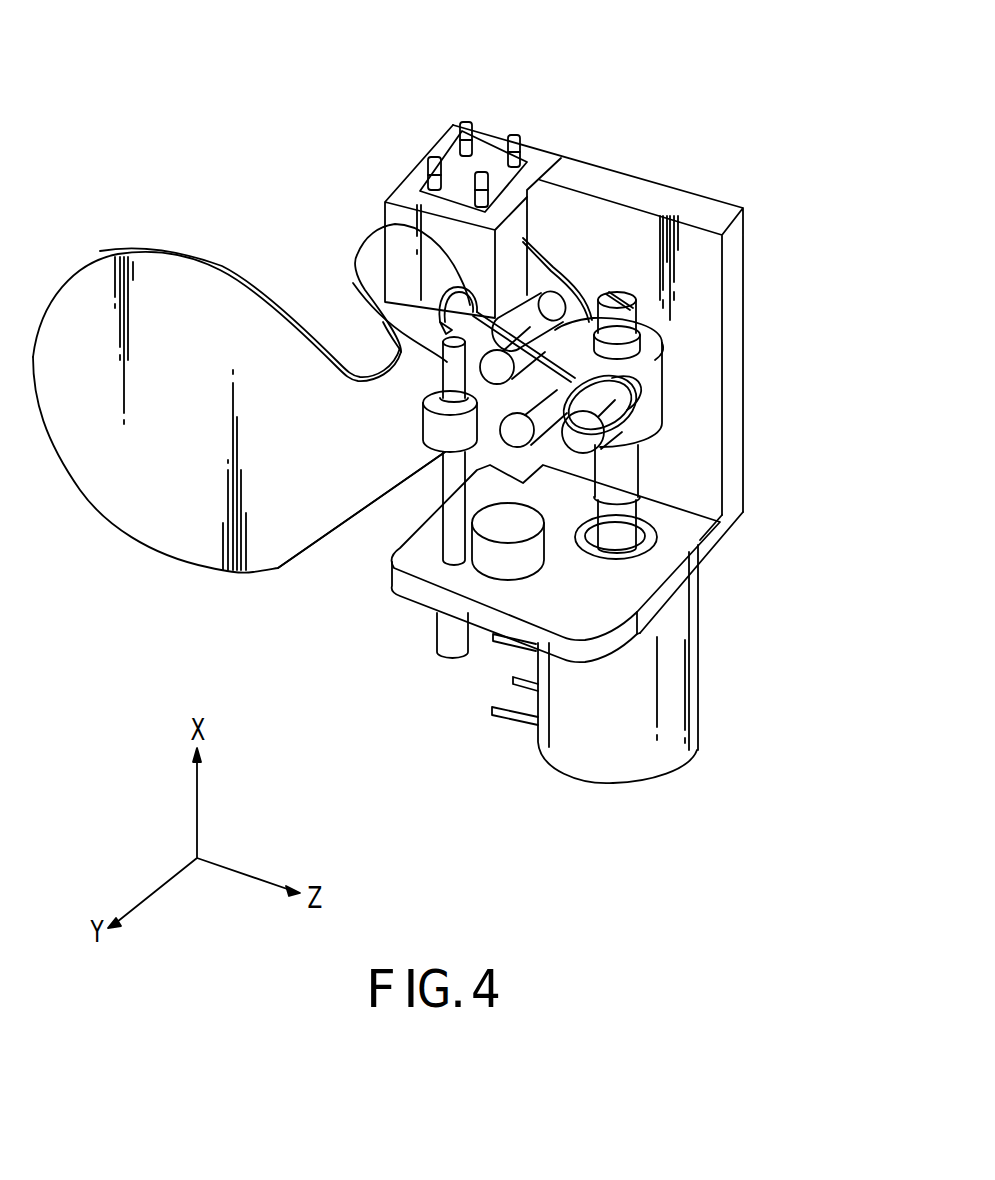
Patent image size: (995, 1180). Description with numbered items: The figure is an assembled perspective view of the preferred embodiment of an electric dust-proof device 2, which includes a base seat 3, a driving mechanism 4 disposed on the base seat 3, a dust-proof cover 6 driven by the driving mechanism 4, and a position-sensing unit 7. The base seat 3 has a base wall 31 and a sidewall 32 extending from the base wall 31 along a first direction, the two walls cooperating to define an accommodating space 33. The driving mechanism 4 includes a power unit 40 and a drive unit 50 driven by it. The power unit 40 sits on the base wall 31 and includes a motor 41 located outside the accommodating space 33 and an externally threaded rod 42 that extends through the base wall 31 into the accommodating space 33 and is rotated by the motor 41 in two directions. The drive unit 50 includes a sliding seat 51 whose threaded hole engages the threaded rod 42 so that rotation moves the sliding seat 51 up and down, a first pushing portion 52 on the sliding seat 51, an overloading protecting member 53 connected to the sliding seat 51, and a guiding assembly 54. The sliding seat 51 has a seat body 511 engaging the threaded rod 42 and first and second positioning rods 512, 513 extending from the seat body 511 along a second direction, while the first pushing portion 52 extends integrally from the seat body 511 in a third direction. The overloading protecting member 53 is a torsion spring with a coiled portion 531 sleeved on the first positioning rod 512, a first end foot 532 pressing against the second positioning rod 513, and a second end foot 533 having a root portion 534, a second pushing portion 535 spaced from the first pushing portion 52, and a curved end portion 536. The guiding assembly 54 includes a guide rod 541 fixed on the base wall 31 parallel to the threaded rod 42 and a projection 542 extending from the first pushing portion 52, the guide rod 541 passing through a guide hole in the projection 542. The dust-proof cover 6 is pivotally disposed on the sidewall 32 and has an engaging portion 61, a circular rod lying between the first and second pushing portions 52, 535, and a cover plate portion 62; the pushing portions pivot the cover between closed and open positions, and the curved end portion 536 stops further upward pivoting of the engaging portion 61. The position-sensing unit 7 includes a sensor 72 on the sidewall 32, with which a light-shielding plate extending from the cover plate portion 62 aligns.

The electric dust-proof device 2 is at (610, 375).
The base seat 3 is at (614, 415).
The driving mechanism 4 is at (657, 630).
The dust-proof cover 6 is at (255, 377).
The position-sensing unit 7 is at (456, 164).
The base wall 31 is at (742, 647).
The sidewall 32 is at (644, 320).
The accommodating space 33 is at (609, 563).
The power unit 40 is at (679, 710).
The motor 41 is at (657, 680).
The externally threaded rod 42 is at (715, 574).
The drive unit 50 is at (572, 442).
The sliding seat 51 is at (681, 404).
The first pushing portion 52 is at (423, 514).
The overloading protecting member 53 is at (680, 437).
The guiding assembly 54 is at (397, 521).
The engaging portion 61 is at (535, 219).
The cover plate portion 62 is at (160, 345).
The sensor 72 is at (473, 117).
The seat body 511 is at (707, 318).
The first positioning rod 512 is at (714, 502).
The second positioning rod 513 is at (479, 583).
The coiled portion 531 is at (738, 340).
The first end foot 532 is at (512, 548).
The second end foot 533 is at (384, 267).
The root portion 534 is at (562, 248).
The second pushing portion 535 is at (572, 193).
The curved end portion 536 is at (392, 235).
The guide rod 541 is at (332, 301).
The projection 542 is at (339, 537).